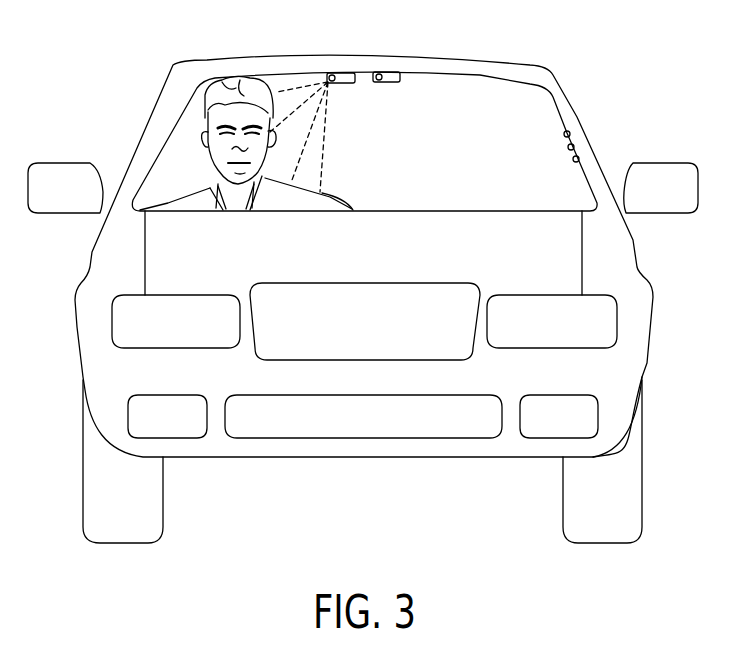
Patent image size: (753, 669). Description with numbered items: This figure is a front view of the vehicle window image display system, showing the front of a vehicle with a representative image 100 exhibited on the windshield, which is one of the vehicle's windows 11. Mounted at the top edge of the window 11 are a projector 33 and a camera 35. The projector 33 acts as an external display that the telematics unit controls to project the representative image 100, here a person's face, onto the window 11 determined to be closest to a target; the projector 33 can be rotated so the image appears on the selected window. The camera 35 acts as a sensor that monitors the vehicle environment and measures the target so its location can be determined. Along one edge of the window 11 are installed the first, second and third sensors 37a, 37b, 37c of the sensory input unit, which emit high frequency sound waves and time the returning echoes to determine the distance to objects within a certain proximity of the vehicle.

The window 11 is at (530, 87).
The representative image 100 is at (240, 113).
The projector 33 is at (343, 73).
The camera 35 is at (390, 72).
The first ultrasonic sensor 37a is at (569, 132).
The second ultrasonic sensor 37b is at (573, 146).
The third ultrasonic sensor 37c is at (578, 158).